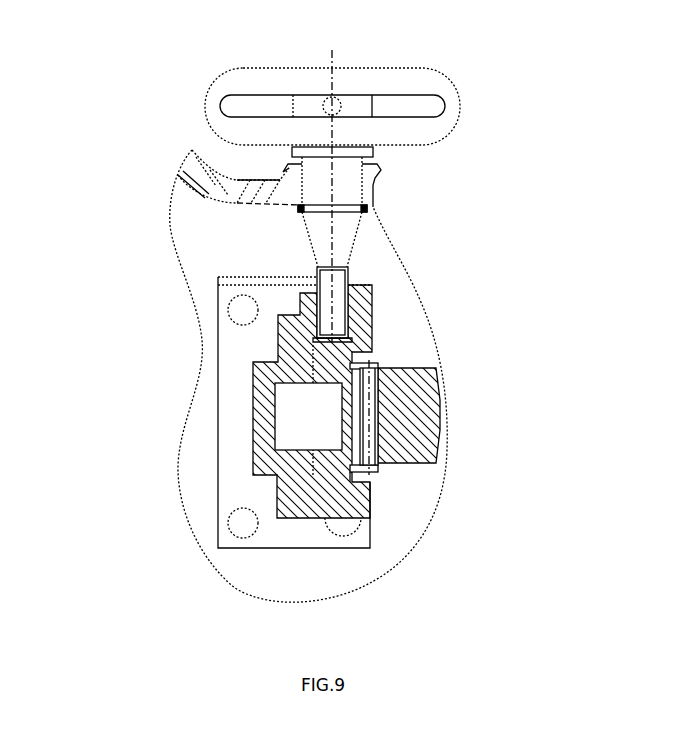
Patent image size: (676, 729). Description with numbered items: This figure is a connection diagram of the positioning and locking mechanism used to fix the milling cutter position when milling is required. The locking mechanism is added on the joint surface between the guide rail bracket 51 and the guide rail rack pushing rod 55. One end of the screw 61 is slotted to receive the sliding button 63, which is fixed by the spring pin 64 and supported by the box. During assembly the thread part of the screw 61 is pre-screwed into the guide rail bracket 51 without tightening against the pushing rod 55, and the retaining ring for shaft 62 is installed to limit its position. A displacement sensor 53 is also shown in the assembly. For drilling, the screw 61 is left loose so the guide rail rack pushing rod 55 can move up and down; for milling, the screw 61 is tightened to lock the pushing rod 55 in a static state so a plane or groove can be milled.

The guide rail bracket 51 is at (290, 487).
The displacement sensor 53 is at (305, 412).
The guide rail rack pushing rod 55 is at (352, 498).
The screw 61 is at (317, 240).
The retaining ring for shaft 62 is at (298, 208).
The sliding button 63 is at (243, 127).
The spring pin 64 is at (325, 103).